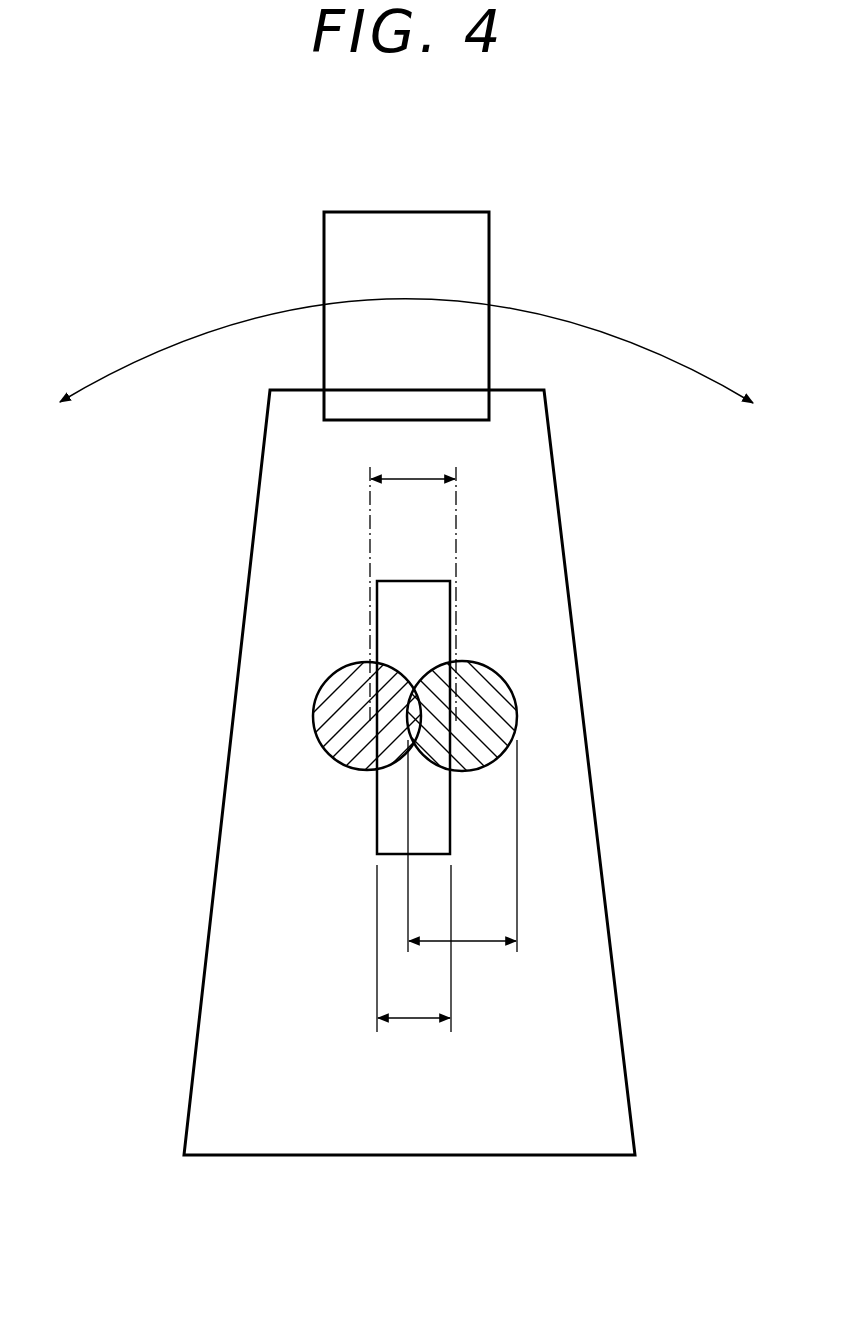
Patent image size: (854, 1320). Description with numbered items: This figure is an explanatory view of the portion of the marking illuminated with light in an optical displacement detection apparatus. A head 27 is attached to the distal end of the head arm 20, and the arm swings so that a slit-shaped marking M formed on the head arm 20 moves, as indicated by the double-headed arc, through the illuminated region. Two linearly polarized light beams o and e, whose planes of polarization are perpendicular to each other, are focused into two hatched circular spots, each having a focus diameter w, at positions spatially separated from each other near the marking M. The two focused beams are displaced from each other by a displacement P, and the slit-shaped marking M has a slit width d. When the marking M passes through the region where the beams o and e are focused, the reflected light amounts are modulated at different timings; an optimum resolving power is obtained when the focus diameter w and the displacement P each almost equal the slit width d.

The head 27 is at (425, 214).
The head arm 20 is at (582, 878).
The slit-shaped marking M is at (402, 632).
The polarized light beam o is at (318, 709).
The polarized light beam e is at (517, 707).
The displacement between the two focused light beams P is at (413, 581).
The focus diameter w is at (462, 846).
The slit width d is at (414, 948).